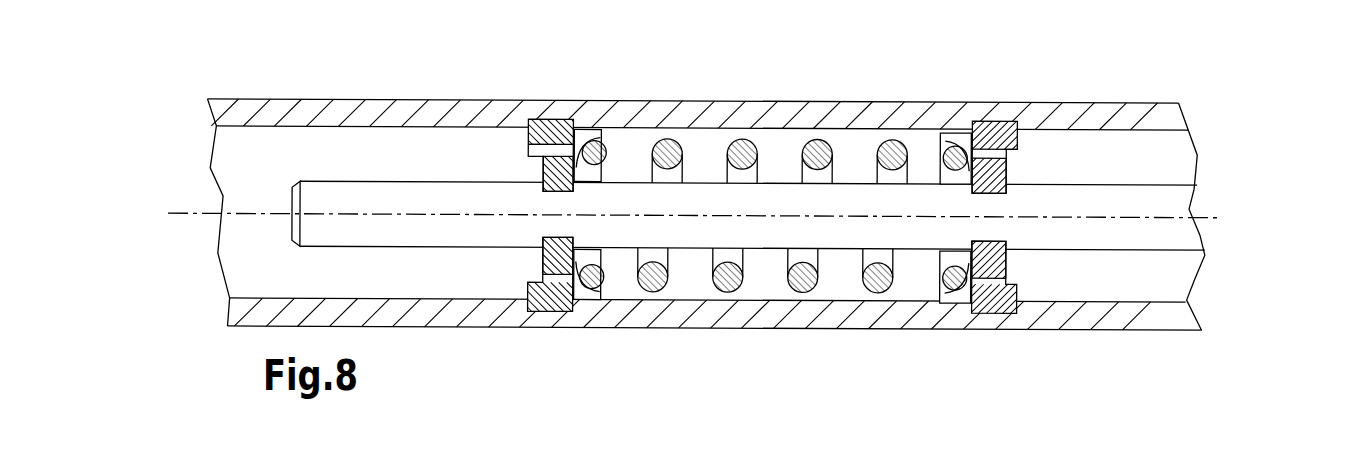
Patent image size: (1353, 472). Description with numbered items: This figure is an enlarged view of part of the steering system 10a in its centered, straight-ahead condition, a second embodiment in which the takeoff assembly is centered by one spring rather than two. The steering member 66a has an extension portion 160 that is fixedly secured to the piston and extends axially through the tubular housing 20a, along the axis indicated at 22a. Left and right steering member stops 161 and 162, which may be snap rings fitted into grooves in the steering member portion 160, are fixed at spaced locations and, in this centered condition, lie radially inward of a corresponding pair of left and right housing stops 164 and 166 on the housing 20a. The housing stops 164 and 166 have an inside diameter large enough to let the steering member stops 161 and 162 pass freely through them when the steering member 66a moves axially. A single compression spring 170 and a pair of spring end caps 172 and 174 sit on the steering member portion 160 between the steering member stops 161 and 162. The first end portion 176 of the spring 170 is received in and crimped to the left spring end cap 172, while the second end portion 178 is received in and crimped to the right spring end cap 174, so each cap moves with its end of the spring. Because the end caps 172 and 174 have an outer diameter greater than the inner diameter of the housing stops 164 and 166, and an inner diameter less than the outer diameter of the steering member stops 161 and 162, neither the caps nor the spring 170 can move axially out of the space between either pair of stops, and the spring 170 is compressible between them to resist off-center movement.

The steering system 10a is at (207, 349).
The housing 20a is at (353, 88).
The bore axis 22a is at (202, 212).
The steering member 66a is at (1174, 177).
The extension portion 160 is at (1153, 235).
The left steering member stop 161 is at (550, 173).
The right steering member stop 162 is at (997, 173).
The left housing stop 164 is at (553, 135).
The right housing stop 166 is at (998, 132).
The spring 170 is at (770, 146).
The left spring end cap 172 is at (589, 317).
The right spring end cap 174 is at (964, 316).
The first end portion 176 is at (598, 280).
The second end portion 178 is at (950, 285).